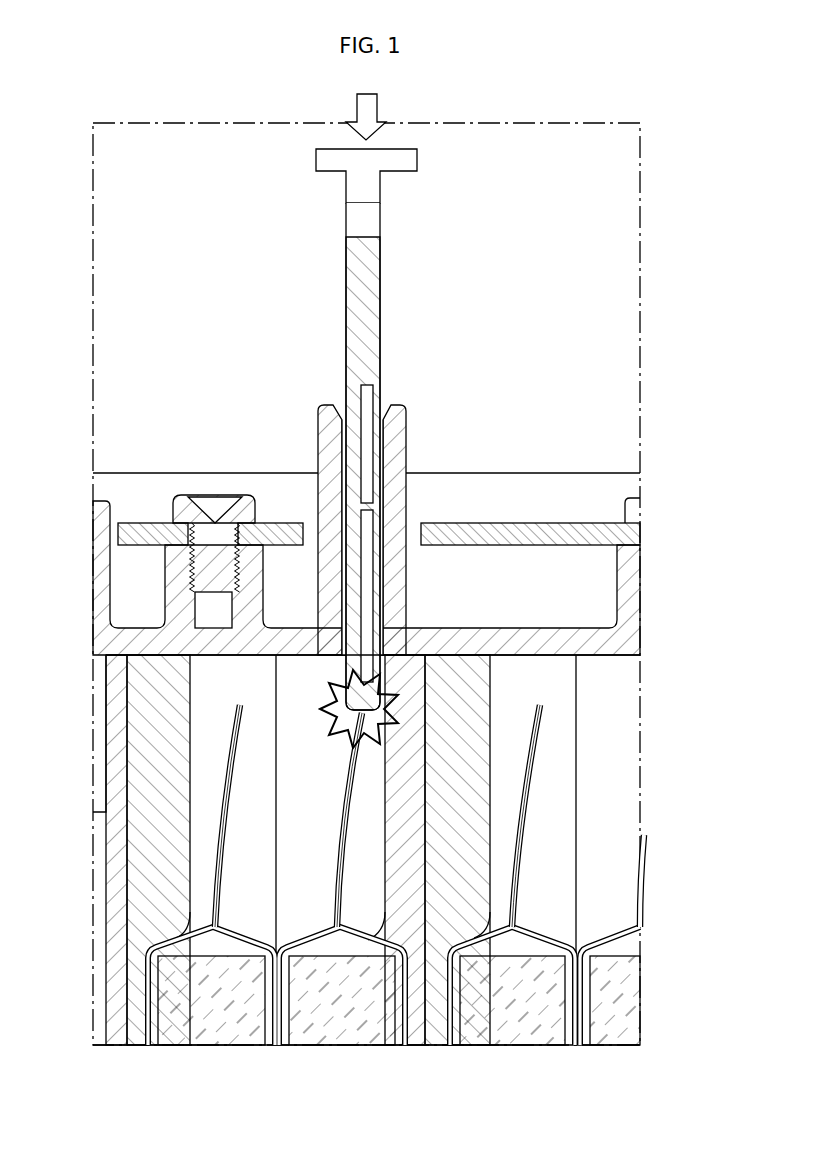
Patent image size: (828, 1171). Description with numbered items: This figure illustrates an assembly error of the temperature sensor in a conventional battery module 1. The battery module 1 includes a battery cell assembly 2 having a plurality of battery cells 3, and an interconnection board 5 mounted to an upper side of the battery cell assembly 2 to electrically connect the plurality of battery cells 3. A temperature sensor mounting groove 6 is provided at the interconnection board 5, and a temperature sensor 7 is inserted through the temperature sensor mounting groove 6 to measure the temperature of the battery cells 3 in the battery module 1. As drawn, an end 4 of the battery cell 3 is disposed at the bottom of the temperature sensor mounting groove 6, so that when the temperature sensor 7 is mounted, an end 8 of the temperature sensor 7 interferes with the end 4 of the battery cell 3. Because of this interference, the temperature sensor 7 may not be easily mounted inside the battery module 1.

The battery module 1 is at (188, 328).
The battery cell assembly 2 is at (637, 786).
The battery cell 3 is at (340, 1047).
The end of the battery cell 4 is at (347, 717).
The interconnection board 5 is at (637, 578).
The temperature sensor mounting groove 6 is at (392, 418).
The temperature sensor 7 is at (412, 256).
The end of the temperature sensor 8 is at (353, 695).